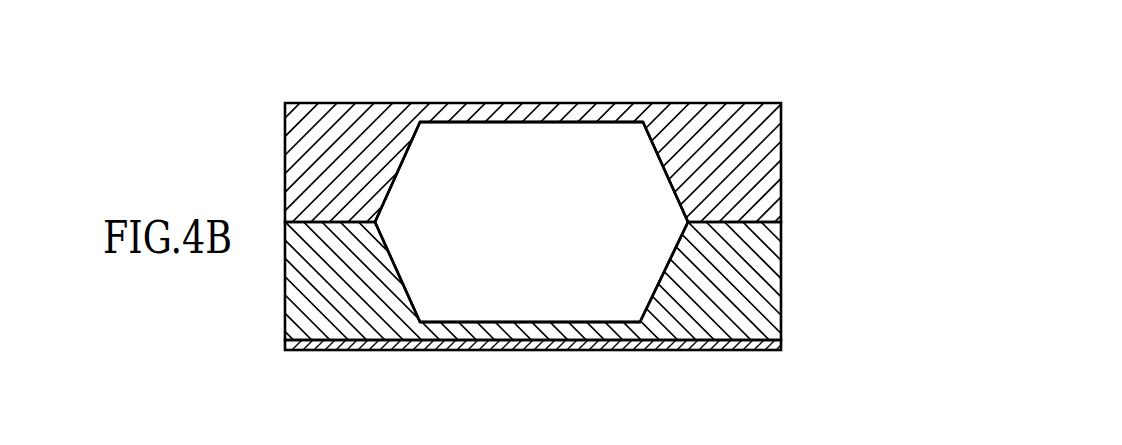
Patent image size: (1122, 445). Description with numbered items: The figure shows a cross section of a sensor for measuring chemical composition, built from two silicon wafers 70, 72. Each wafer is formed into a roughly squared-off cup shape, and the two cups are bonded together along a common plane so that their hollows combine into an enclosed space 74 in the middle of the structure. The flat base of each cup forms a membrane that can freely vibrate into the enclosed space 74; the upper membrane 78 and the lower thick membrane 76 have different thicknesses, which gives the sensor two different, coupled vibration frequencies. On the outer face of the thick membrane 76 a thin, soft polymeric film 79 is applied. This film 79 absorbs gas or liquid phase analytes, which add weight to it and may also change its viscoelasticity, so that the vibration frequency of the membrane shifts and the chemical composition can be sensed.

The silicon wafer 70 is at (781, 151).
The silicon wafer 72 is at (781, 273).
The enclosed space 74 is at (447, 228).
The thick membrane 76 is at (548, 322).
The membrane 78 is at (577, 122).
The polymeric film 79 is at (675, 352).